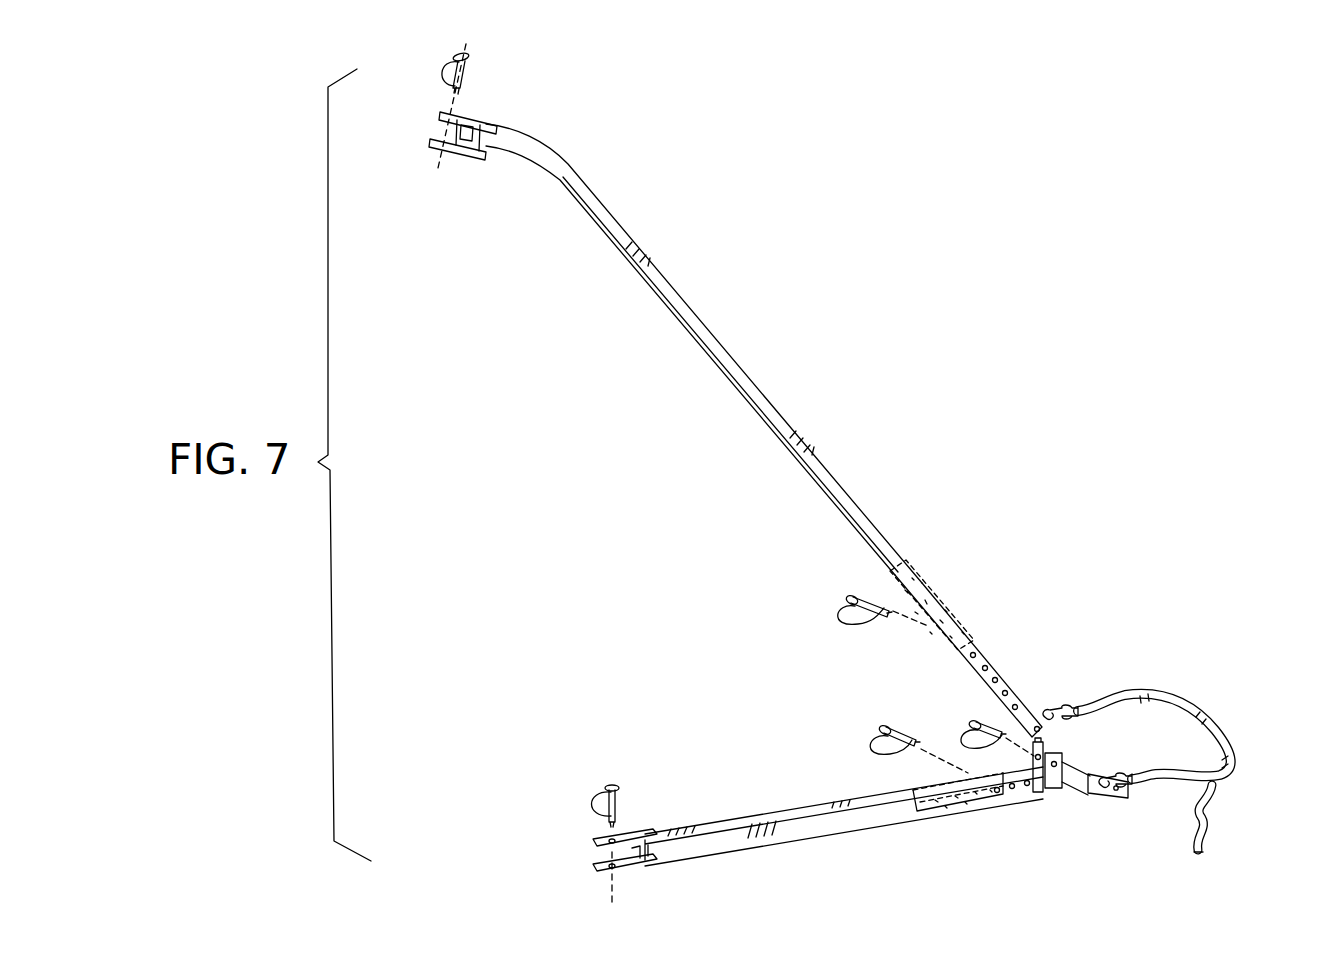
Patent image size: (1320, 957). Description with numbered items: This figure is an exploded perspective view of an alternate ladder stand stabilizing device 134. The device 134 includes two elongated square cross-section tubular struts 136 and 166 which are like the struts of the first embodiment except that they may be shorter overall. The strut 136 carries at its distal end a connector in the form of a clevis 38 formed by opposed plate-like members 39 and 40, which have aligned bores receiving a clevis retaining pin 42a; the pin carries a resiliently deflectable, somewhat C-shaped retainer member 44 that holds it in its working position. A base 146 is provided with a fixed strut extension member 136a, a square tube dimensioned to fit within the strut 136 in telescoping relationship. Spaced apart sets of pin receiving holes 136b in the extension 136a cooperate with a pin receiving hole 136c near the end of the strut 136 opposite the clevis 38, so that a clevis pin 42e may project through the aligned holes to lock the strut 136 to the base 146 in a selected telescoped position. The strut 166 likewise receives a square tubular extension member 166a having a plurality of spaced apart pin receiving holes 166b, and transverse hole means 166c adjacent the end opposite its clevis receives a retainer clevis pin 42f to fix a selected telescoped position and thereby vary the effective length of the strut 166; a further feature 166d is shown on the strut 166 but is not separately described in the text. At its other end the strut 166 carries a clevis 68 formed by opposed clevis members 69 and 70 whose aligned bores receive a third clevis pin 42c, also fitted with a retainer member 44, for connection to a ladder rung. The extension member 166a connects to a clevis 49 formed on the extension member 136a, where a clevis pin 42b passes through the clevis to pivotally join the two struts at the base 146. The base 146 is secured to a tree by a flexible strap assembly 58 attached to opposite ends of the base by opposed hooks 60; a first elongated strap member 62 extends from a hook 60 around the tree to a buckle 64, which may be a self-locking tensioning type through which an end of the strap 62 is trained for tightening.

The ladder stand stabilizing device 134 is at (812, 397).
The second elongated tubular strut 166 is at (913, 571).
The tubular extension member 166a is at (1010, 690).
The pin receiving holes 166b is at (990, 664).
The transverse hole means 166c is at (962, 634).
The adjustment hole 166d is at (1020, 705).
The clevis 68 is at (467, 124).
The clevis member 69 is at (440, 114).
The clevis member 70 is at (430, 146).
The clevis retaining pin 42a is at (592, 806).
The clevis pin 42b is at (973, 725).
The third clevis pin 42c is at (467, 71).
The clevis pin 42e is at (884, 724).
The retainer clevis pin 42f is at (846, 598).
The retainer member 44 is at (440, 72).
The elongated tubular strut 136 is at (874, 844).
The fixed strut extension member 136a is at (1027, 787).
The pin receiving holes 136b is at (1010, 790).
The pin receiving hole 136c is at (994, 794).
The clevis 38 is at (652, 868).
The clevis plate member 39 is at (640, 829).
The clevis plate member 40 is at (600, 866).
The clevis 49 is at (1043, 750).
The base 146 is at (1100, 798).
The flexible strap assembly 58 is at (1170, 710).
The hook 60 is at (1048, 712).
The first elongated strap member 62 is at (1223, 746).
The buckle 64 is at (1212, 778).